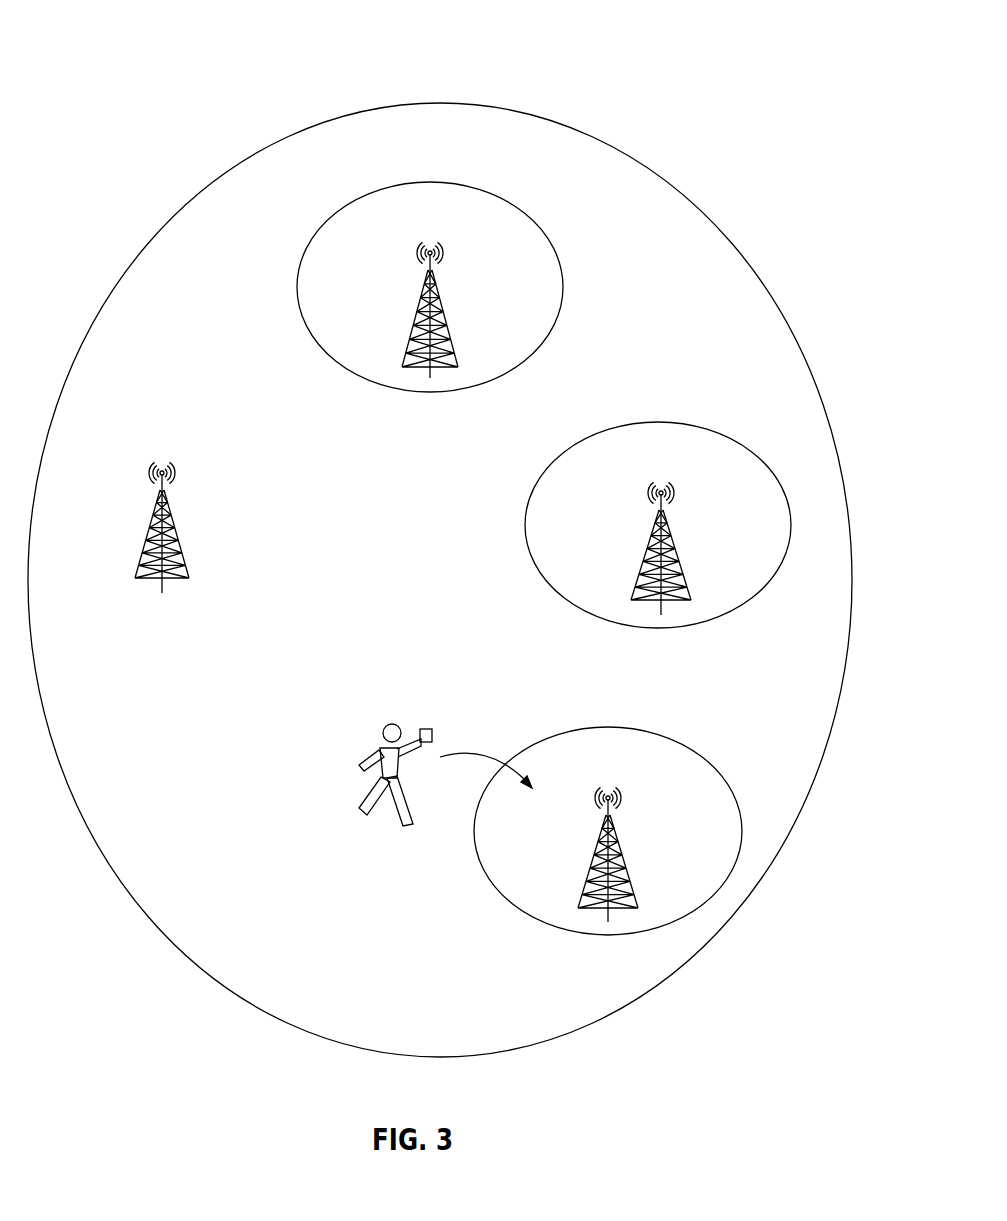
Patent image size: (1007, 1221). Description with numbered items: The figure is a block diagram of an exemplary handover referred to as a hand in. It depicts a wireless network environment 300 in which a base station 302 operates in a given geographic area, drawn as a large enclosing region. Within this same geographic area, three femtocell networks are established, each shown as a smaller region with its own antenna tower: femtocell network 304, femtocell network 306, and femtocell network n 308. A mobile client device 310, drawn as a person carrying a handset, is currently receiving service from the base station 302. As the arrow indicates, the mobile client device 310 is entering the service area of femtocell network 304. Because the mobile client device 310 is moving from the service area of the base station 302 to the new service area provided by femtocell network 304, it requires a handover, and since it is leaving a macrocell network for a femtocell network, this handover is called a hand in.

The wireless network environment 300 is at (836, 21).
The base station 302 is at (177, 464).
The femtocell network 304 is at (677, 740).
The femtocell network 306 is at (727, 432).
The femtocell network n 308 is at (527, 211).
The mobile client device 310 is at (429, 727).